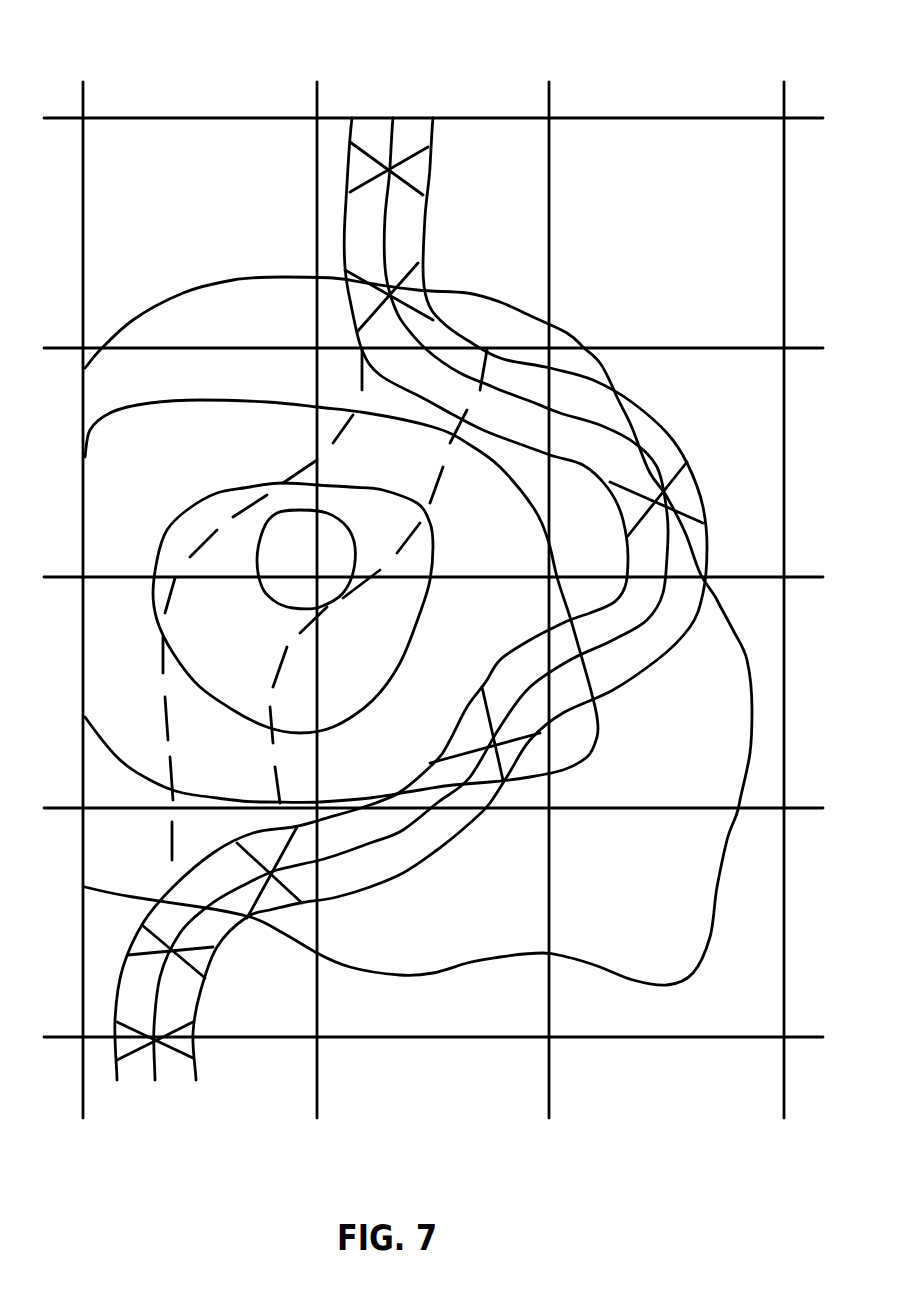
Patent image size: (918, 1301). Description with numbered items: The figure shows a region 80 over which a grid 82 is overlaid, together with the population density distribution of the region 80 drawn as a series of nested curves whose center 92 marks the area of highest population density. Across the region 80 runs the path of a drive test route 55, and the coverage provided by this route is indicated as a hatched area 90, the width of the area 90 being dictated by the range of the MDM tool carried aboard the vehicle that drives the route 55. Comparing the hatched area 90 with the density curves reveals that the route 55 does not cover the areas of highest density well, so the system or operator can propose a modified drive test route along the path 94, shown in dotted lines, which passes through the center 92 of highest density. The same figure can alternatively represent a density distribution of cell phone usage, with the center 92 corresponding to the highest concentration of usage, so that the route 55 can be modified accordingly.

The region 80 is at (160, 70).
The grid 82 is at (103, 655).
The hatched area 90 is at (370, 887).
The center 92 is at (343, 603).
The path 94 is at (172, 822).
The drive test route 55 is at (143, 1082).